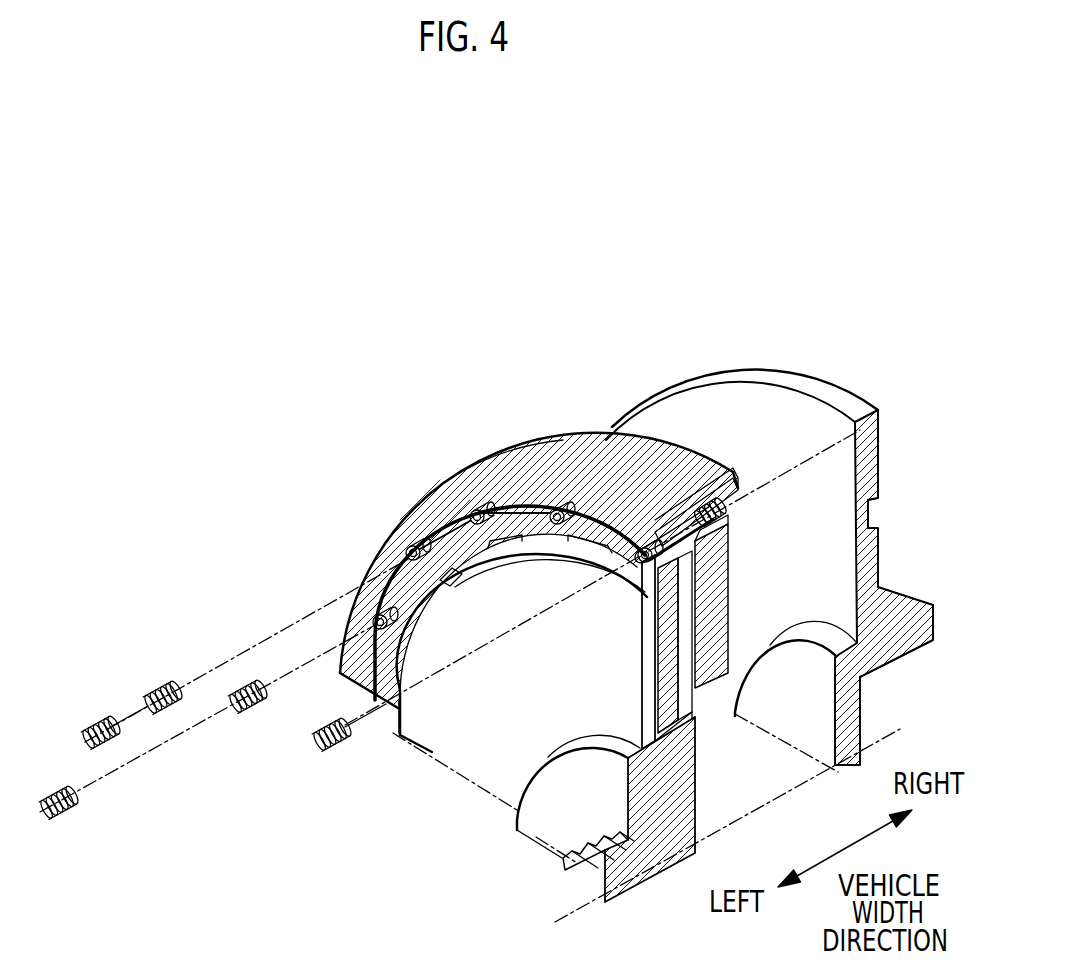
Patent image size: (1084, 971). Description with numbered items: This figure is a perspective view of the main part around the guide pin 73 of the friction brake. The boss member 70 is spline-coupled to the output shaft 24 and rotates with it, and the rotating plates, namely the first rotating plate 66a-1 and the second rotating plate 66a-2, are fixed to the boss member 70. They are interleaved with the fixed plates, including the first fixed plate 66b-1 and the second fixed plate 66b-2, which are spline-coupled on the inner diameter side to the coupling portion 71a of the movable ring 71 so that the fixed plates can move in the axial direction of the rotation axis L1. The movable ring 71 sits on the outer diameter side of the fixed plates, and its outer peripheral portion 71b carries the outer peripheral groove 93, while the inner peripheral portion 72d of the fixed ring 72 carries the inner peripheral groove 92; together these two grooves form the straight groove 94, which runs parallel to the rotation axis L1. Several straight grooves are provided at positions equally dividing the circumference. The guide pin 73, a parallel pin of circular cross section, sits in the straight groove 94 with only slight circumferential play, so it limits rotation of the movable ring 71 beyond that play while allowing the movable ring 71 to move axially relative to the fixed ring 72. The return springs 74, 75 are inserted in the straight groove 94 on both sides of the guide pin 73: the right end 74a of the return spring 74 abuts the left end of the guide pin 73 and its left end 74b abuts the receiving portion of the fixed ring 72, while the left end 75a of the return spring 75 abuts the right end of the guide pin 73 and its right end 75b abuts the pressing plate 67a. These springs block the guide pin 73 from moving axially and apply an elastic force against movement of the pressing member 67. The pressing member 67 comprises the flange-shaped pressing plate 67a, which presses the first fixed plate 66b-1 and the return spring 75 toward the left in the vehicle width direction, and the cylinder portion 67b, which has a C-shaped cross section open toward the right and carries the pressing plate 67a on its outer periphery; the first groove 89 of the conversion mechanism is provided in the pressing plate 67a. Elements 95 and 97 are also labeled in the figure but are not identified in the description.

The output shaft 24 is at (563, 866).
The first rotating plate 66a-1 is at (715, 610).
The second rotating plate 66a-2 is at (668, 640).
The first fixed plate 66b-1 is at (696, 720).
The second fixed plate 66b-2 is at (650, 680).
The pressing member 67 is at (895, 555).
The pressing plate 67a is at (866, 455).
The cylinder portion 67b is at (903, 595).
The boss member 70 is at (547, 813).
The movable ring 71 is at (622, 508).
The coupling portion 71a is at (445, 600).
The outer peripheral portion 71b is at (501, 490).
The fixed ring 72 is at (590, 470).
The inner peripheral portion 72d is at (535, 548).
The guide pin 73 is at (438, 435).
The return spring 74 is at (355, 797).
The right end of return spring 74a is at (380, 748).
The left end of return spring 74b is at (325, 742).
The return spring 75 is at (713, 505).
The left end of return spring 75a is at (708, 500).
The right end of return spring 75b is at (742, 497).
The first groove 89 is at (870, 515).
The inner peripheral groove 92 is at (340, 528).
The outer peripheral groove 93 is at (745, 555).
The straight groove 94 is at (385, 478).
The slot 95 is at (457, 570).
The projection 97 is at (730, 537).
The rotation axis L1 is at (745, 828).